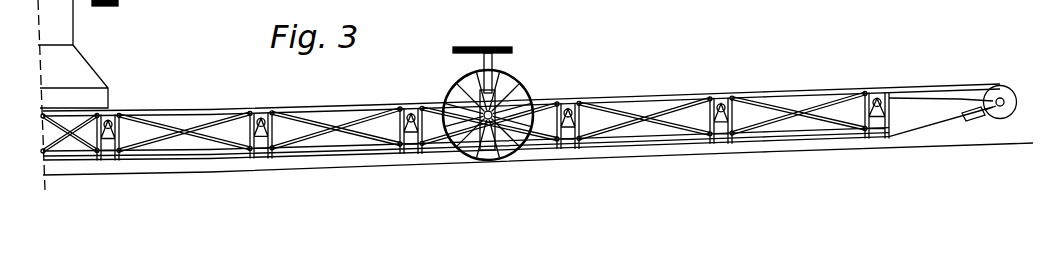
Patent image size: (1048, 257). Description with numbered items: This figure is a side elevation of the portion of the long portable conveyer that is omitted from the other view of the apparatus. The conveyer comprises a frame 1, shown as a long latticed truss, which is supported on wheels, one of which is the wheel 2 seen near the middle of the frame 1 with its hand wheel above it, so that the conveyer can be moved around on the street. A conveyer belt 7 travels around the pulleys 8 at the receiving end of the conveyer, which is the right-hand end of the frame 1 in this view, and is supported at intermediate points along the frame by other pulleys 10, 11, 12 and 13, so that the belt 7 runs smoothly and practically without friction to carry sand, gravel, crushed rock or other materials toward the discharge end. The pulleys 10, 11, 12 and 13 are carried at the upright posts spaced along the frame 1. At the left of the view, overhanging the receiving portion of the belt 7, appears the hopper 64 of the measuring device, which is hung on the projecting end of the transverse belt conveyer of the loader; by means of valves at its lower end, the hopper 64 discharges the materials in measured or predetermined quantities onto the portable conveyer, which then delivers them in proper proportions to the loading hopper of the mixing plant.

The frame 1 is at (625, 115).
The wheel 2 is at (522, 95).
The conveyer belt 7 is at (986, 120).
The pulleys 8 is at (1003, 93).
The pulley 10 is at (409, 108).
The pulley 11 is at (572, 108).
The pulley 12 is at (722, 97).
The pulley 13 is at (868, 93).
The hopper 64 is at (82, 55).